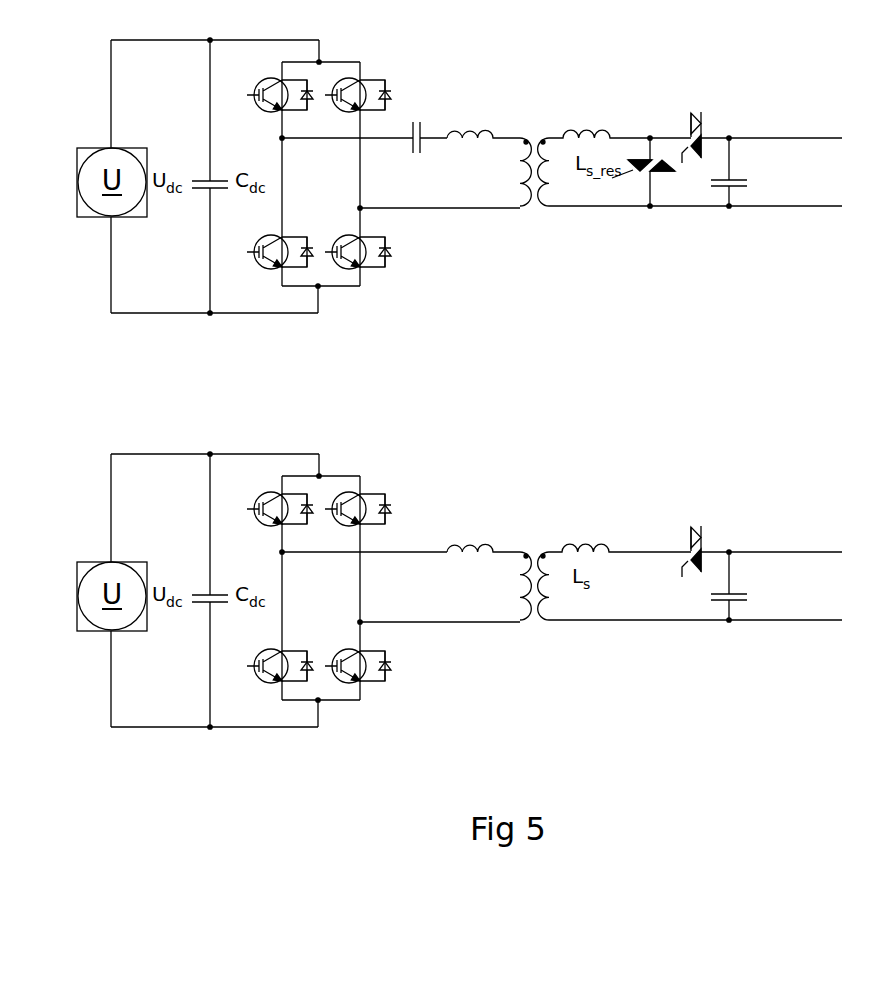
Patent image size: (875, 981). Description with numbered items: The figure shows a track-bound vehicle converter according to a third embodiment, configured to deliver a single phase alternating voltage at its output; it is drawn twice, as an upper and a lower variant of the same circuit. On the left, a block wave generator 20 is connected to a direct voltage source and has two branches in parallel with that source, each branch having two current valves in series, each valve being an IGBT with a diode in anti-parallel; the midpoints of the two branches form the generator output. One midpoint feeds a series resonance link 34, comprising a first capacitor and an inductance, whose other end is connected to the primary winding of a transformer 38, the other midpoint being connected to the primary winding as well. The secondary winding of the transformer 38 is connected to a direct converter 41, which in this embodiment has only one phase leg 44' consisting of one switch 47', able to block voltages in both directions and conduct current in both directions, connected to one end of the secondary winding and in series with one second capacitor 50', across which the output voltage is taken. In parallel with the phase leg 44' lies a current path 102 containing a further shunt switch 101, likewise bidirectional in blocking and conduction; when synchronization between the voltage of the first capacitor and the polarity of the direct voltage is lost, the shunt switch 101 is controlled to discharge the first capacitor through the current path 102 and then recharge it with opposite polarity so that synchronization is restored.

The block wave generator 20 is at (318, 313).
The series resonance link 34 is at (432, 193).
The transformer 38 is at (536, 217).
The switch 47' is at (707, 305).
The phase leg 44' is at (771, 306).
The second capacitor 50' is at (744, 360).
The direct converter 41 is at (758, 210).
The shunt switch 101 is at (655, 172).
The current path 102 is at (650, 187).